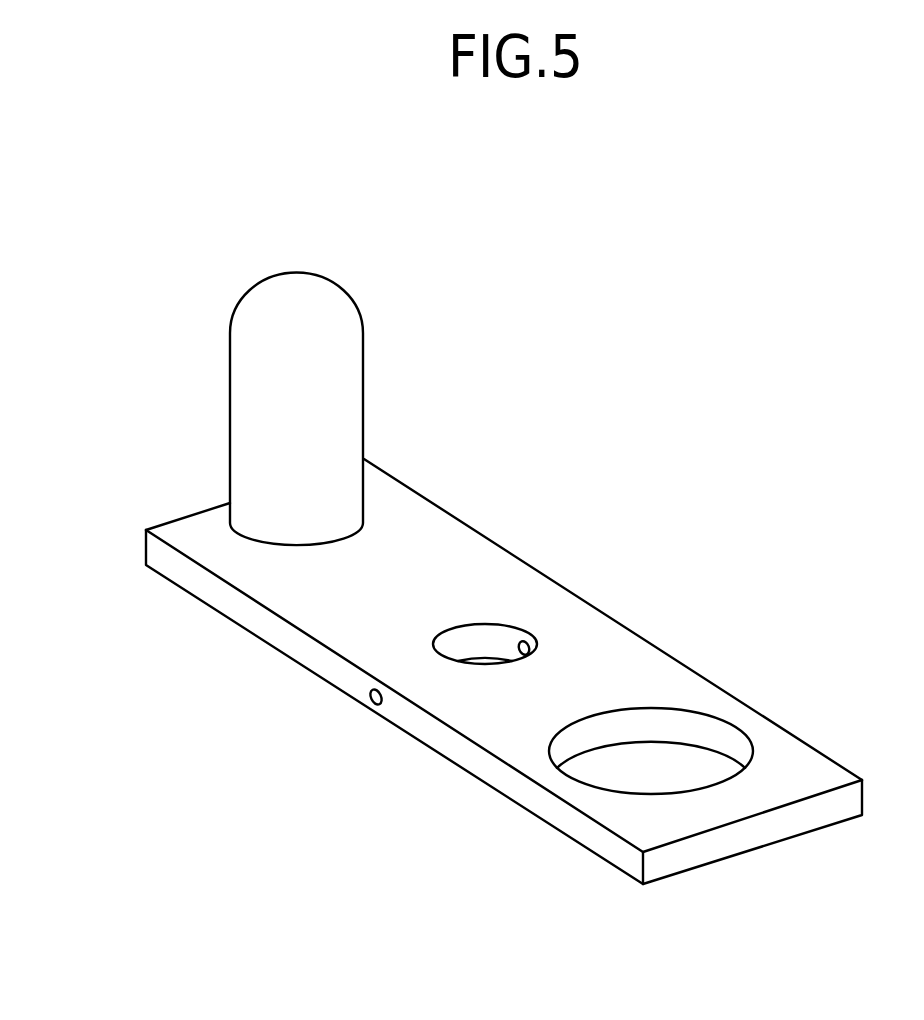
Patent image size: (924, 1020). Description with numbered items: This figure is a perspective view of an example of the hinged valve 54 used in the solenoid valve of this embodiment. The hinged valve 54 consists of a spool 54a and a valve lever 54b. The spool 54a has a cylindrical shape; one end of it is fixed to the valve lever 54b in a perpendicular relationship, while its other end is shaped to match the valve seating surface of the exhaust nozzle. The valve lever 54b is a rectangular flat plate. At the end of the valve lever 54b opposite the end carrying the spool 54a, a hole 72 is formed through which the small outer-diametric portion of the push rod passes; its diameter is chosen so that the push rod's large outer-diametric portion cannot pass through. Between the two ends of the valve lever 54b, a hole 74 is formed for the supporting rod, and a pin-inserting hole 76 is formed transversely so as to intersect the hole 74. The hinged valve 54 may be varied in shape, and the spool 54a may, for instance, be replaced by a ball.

The hinged valve 54 is at (699, 423).
The spool 54a is at (252, 320).
The valve lever 54b is at (331, 621).
The hole 72 is at (653, 760).
The hole 74 is at (484, 637).
The pin-inserting hole 76 is at (521, 655).